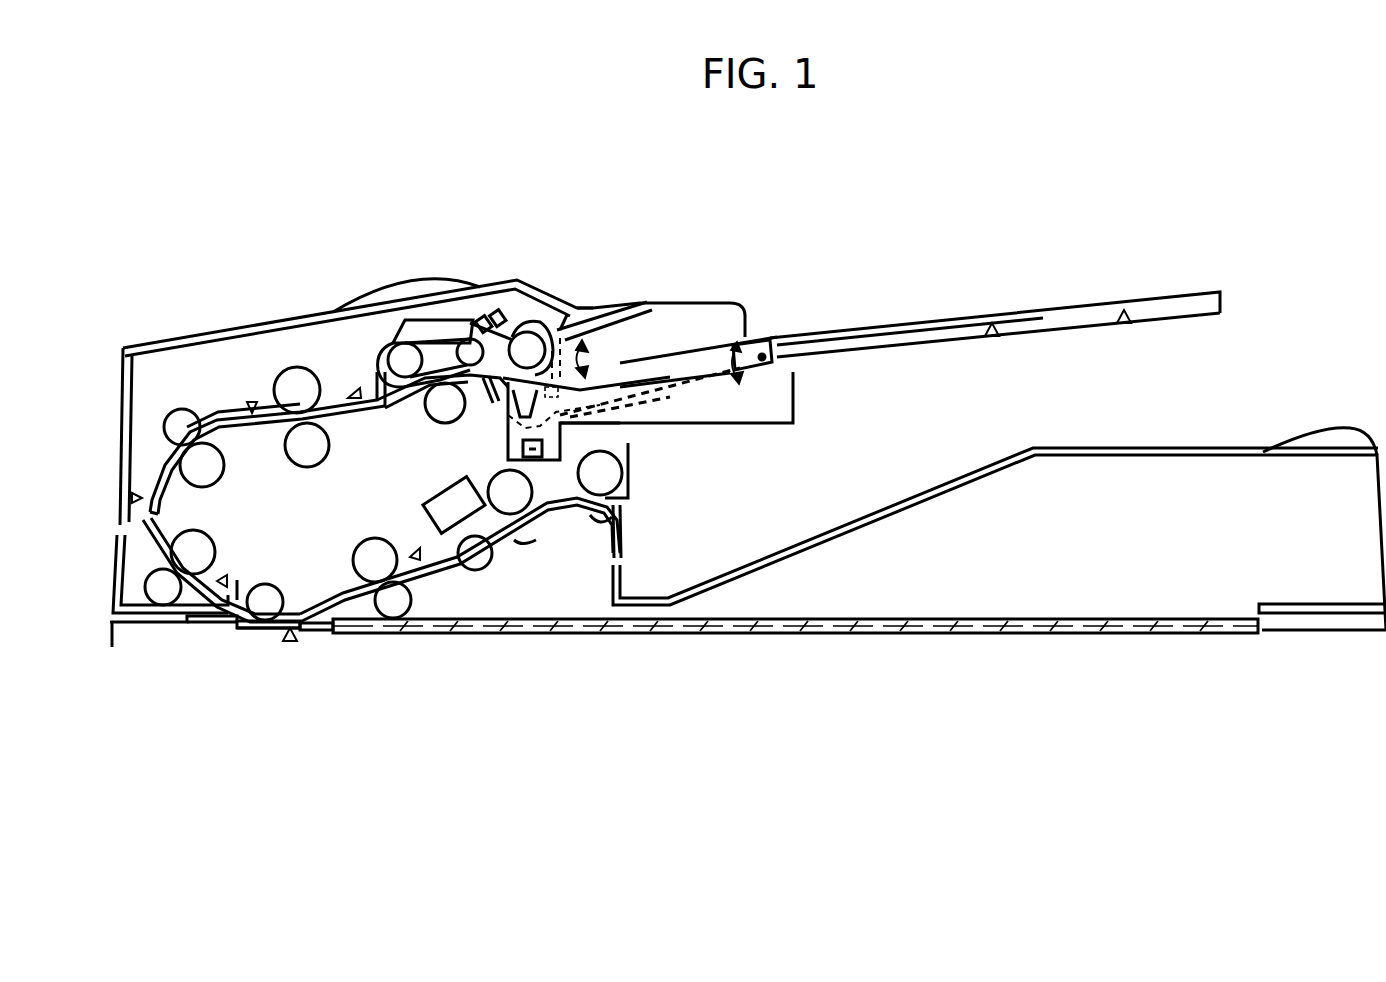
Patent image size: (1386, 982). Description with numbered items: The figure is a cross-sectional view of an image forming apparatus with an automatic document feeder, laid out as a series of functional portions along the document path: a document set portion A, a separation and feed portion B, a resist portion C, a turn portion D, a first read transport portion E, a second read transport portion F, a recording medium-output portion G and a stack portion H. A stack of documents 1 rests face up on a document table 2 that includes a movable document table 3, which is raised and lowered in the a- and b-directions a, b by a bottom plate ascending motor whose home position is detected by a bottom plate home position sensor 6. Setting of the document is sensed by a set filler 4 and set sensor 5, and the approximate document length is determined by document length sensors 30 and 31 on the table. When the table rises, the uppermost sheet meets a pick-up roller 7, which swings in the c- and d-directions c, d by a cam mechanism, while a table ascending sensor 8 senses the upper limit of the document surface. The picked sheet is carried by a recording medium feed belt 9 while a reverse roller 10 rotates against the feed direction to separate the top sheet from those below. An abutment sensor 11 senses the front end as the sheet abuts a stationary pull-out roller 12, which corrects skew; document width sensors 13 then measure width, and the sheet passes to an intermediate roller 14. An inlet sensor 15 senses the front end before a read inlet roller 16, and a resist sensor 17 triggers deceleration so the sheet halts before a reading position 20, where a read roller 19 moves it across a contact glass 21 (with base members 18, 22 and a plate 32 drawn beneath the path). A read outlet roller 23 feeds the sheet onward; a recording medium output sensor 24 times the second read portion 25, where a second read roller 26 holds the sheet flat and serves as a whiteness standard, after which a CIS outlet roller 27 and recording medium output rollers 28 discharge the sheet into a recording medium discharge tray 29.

The stack of documents 1 is at (885, 315).
The document table 2 is at (925, 330).
The movable document table 3 is at (700, 360).
The set filler 4 is at (572, 306).
The set sensor 5 is at (568, 398).
The bottom plate home position sensor 6 is at (582, 486).
The pick-up roller 7 is at (536, 330).
The table ascending sensor 8 is at (485, 310).
The recording medium feed belt 9 is at (440, 342).
The reverse roller 10 is at (428, 420).
The abutment sensor 11 is at (350, 388).
The pull-out roller 12 is at (332, 440).
The document width sensors 13 is at (246, 404).
The intermediate roller 14 is at (226, 457).
The inlet sensor 15 is at (138, 492).
The read inlet roller 16 is at (212, 537).
The resist sensor 17 is at (228, 581).
The base plate 18 is at (210, 628).
The read roller 19 is at (290, 592).
The reading position 20 is at (290, 645).
The contact glass 21 is at (258, 630).
The plate member 22 is at (313, 632).
The read outlet roller 23 is at (352, 549).
The recording medium output sensor 24 is at (410, 550).
The second read portion 25 is at (460, 494).
The second read roller 26 is at (492, 566).
The CIS outlet roller 27 is at (500, 472).
The recording medium output roller 28 is at (634, 474).
The recording medium discharge tray 29 is at (800, 540).
The document length sensor 30 is at (1003, 330).
The document length sensor 31 is at (1135, 316).
The plate member 32 is at (285, 630).
The document set portion A is at (768, 318).
The separation and feed portion B is at (472, 264).
The resist portion C is at (290, 350).
The turn portion D is at (175, 392).
The first read transport portion E is at (278, 565).
The second read transport portion F is at (428, 492).
The recording medium-output portion G is at (590, 558).
The stack portion H is at (868, 488).
The a-direction a is at (736, 351).
The b-direction b is at (745, 398).
The c-direction c is at (589, 355).
The d-direction d is at (599, 378).